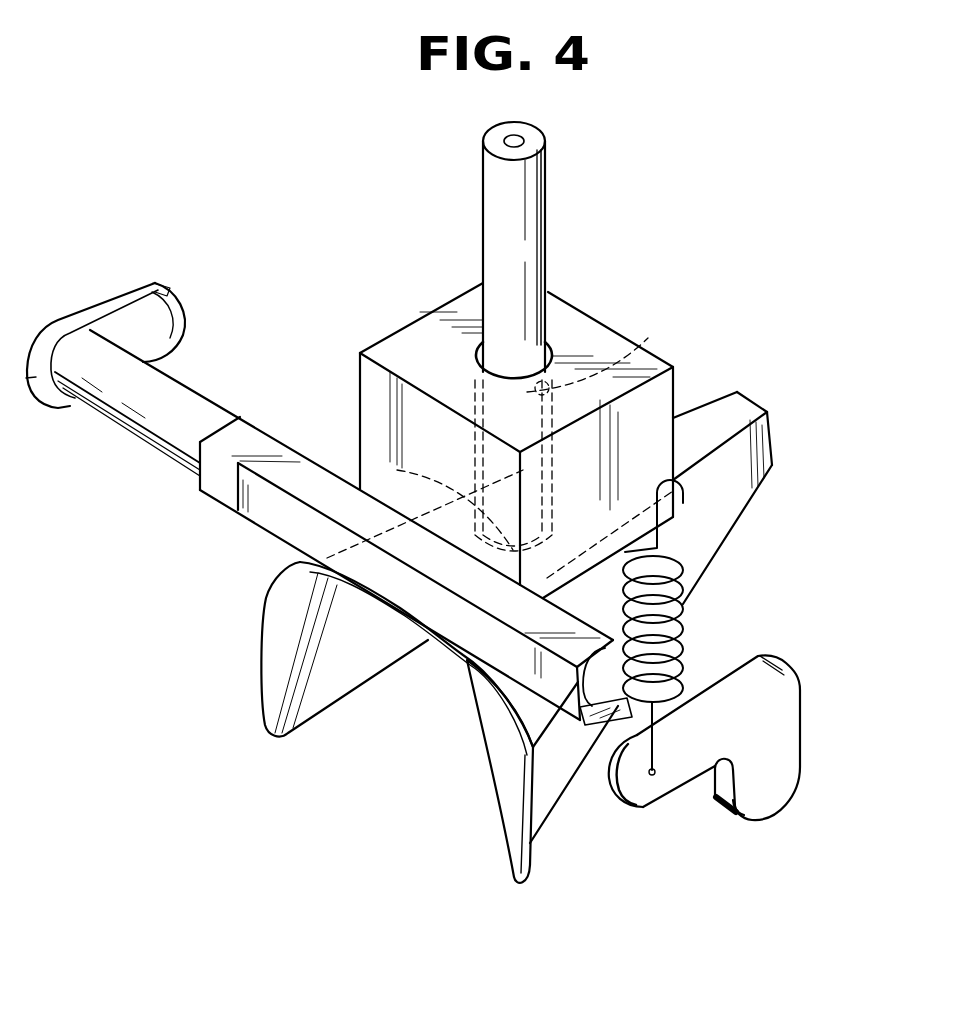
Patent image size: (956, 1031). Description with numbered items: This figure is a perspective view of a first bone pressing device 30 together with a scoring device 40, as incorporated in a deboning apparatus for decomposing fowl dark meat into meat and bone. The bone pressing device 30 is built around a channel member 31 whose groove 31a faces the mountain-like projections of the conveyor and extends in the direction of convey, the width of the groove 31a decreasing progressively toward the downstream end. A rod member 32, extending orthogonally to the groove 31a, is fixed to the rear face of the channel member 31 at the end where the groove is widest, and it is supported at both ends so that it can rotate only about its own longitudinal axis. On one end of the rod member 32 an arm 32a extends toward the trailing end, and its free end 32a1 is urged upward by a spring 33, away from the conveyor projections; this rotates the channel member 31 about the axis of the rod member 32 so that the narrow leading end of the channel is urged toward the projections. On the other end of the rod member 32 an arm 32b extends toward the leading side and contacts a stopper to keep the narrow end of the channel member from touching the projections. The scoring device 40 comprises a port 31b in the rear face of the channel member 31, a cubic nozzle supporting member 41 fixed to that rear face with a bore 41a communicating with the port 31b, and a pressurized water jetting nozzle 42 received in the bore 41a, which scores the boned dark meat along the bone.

The first bone pressing device 30 is at (559, 692).
The channel member 31 is at (770, 440).
The groove 31a is at (432, 662).
The port 31b is at (348, 427).
The rod member 32 is at (242, 414).
The arm 32a is at (704, 772).
The free end 32a1 is at (642, 797).
The arm 32b is at (152, 283).
The spring 33 is at (686, 627).
The scoring device 40 is at (638, 211).
The nozzle supporting member 41 is at (575, 313).
The bore 41a is at (553, 385).
The pressurized water jetting nozzle 42 is at (541, 182).